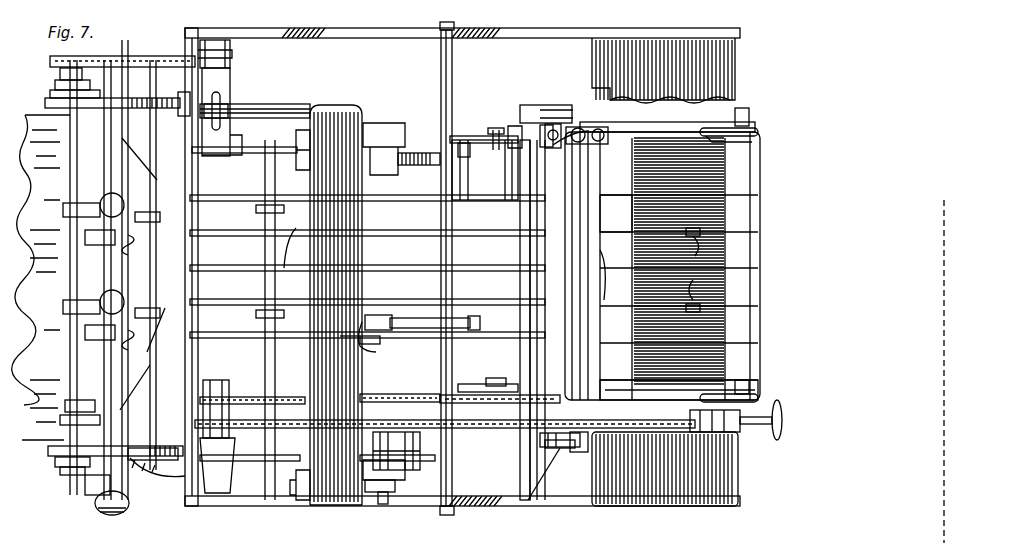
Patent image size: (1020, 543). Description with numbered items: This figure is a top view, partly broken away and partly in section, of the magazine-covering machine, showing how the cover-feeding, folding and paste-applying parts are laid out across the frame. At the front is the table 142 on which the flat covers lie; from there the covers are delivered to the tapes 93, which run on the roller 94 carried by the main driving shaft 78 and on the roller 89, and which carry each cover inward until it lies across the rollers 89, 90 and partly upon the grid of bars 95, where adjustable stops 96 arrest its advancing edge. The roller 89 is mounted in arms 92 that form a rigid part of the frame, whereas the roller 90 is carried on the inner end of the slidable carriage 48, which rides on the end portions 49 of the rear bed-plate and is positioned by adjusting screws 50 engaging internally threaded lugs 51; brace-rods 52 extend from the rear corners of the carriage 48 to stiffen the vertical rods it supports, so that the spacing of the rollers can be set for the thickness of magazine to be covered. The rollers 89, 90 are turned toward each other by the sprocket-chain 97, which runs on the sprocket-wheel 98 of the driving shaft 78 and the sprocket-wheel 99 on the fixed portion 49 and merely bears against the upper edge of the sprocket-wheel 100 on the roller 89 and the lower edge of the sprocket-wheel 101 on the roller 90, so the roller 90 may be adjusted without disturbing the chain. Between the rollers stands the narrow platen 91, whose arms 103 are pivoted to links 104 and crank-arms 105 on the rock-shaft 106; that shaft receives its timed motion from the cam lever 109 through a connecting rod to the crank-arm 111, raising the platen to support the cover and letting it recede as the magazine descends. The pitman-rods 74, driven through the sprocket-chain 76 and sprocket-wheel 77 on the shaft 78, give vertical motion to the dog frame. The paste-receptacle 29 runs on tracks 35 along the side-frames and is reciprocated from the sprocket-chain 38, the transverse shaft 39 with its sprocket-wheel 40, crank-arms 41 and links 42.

The paste-receptacle 29 is at (336, 110).
The tracks 35 is at (266, 114).
The sprocket-chain 38 is at (278, 462).
The transverse shaft 39 is at (378, 354).
The sprocket-wheel 40 is at (403, 468).
The crank-arms 41 is at (402, 138).
The links 42 is at (373, 124).
The carriage 48 is at (662, 261).
The end portions of bed-plate 49 is at (665, 272).
The adjusting screws 50 is at (780, 424).
The internally threaded lugs 51 is at (716, 434).
The brace-rods 52 is at (742, 128).
The pitman-rods 74 is at (570, 112).
The sprocket-chain 76 is at (306, 398).
The sprocket-wheel 77 is at (250, 392).
The main driving shaft 78 is at (202, 388).
The roller 89 is at (491, 320).
The roller 90 is at (597, 192).
The platen 91 is at (585, 132).
The arms 92 is at (486, 136).
The tapes 93 is at (294, 228).
The roller 94 is at (232, 154).
The grid of bars 95 is at (624, 198).
The adjustable stops 96 is at (693, 270).
The sprocket-chain 97 is at (290, 428).
The sprocket-wheel 98 is at (192, 456).
The sprocket-wheel 99 is at (700, 398).
The sprocket-wheel 100 is at (528, 470).
The sprocket-wheel 101 is at (552, 454).
The arms 103 is at (516, 128).
The links 104 is at (496, 128).
The crank-arms 105 is at (464, 140).
The rock-shaft 106 is at (468, 250).
The lever 109 is at (380, 350).
The crank-arm 111 is at (440, 316).
The table 142 is at (103, 277).